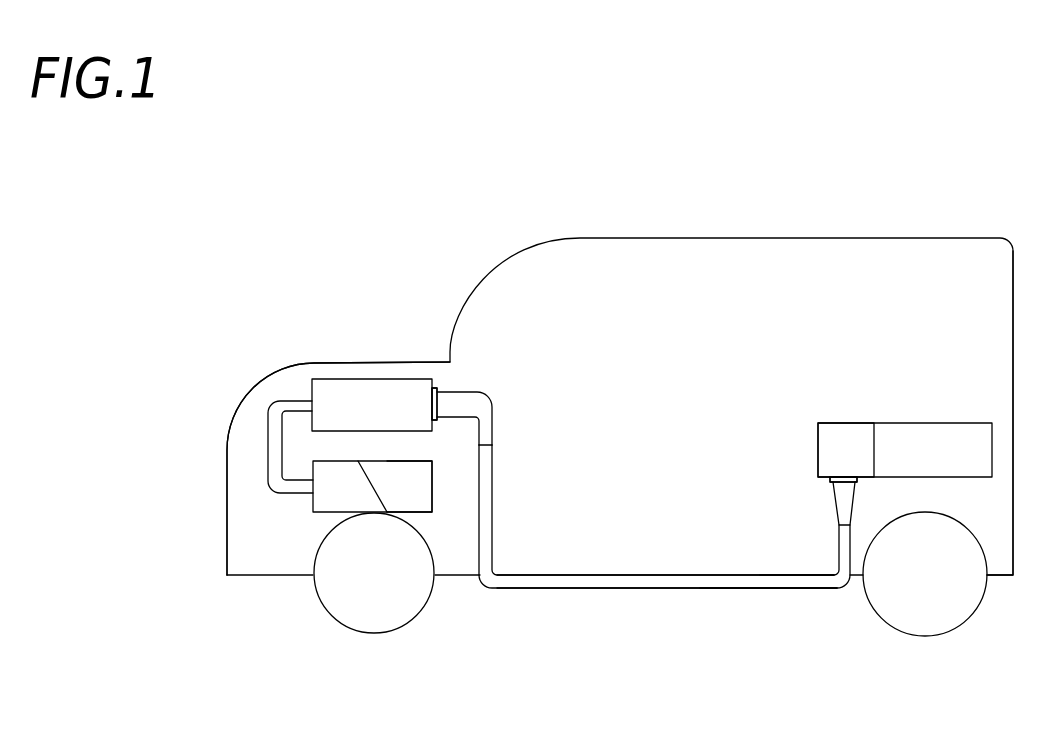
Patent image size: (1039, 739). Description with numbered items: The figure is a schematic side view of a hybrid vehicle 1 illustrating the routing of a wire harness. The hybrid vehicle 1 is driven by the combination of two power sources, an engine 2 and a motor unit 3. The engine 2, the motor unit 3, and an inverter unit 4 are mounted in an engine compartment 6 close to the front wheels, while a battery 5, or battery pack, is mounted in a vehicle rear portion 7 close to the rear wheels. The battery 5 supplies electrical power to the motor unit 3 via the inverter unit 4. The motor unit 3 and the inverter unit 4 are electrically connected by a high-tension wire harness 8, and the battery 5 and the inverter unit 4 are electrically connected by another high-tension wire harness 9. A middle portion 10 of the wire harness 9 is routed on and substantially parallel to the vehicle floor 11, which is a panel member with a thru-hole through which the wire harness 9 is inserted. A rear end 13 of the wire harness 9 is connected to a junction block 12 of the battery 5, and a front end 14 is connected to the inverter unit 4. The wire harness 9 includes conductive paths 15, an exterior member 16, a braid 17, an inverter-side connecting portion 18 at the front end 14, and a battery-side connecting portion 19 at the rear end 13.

The hybrid vehicle 1 is at (245, 257).
The engine 2 is at (422, 495).
The motor unit 3 is at (328, 500).
The inverter unit 4 is at (348, 388).
The battery 5 is at (913, 437).
The engine compartment 6 is at (243, 528).
The vehicle rear portion 7 is at (1002, 555).
The high-tension wire harness 8 is at (273, 417).
The high-tension wire harness 9 is at (670, 589).
The middle portion 10 is at (583, 590).
The vehicle floor 11 is at (622, 573).
The junction block 12 is at (833, 433).
The rear end 13 is at (828, 480).
The front end 14 is at (436, 385).
The conductive paths 15 is at (780, 582).
The exterior member 16 is at (732, 590).
The braid 17 is at (492, 405).
The inverter-side connecting portion 18 is at (434, 404).
The battery-side connecting portion 19 is at (843, 479).